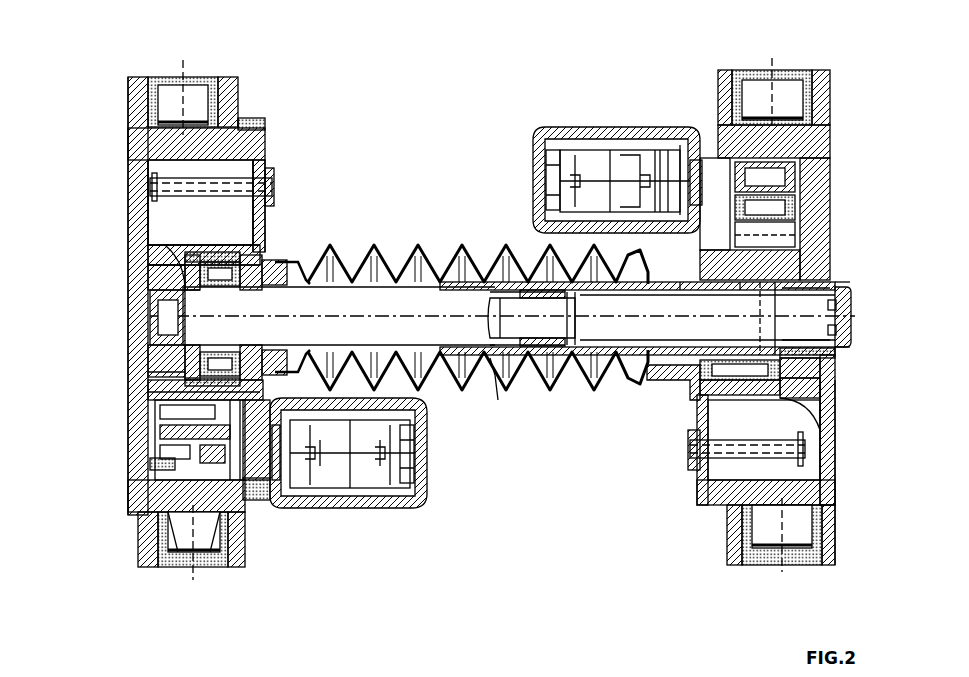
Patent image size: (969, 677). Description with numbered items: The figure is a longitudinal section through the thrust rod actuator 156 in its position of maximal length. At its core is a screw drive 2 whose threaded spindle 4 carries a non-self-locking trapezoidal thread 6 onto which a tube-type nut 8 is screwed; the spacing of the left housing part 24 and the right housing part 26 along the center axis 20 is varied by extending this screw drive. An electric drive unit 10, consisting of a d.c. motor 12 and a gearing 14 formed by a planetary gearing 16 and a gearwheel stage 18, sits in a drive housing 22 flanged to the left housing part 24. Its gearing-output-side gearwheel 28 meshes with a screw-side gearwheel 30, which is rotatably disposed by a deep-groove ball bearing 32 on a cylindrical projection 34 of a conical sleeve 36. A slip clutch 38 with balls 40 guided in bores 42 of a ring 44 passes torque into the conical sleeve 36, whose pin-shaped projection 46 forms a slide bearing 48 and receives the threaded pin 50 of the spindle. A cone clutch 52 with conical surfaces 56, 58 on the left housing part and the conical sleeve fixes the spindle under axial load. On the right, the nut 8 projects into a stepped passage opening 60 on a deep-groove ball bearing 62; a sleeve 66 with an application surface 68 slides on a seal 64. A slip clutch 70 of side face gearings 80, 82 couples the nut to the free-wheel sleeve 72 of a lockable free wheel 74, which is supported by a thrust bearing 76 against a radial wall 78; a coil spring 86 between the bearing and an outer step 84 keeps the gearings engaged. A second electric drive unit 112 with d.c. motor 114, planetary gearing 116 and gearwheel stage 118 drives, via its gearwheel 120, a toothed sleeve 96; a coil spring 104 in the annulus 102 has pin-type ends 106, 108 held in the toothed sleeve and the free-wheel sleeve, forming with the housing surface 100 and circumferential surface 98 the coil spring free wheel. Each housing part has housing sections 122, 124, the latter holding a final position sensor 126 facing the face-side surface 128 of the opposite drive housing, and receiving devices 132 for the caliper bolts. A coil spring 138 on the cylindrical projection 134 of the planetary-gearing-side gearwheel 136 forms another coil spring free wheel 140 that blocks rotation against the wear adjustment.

The screw drive 2 is at (530, 392).
The threaded spindle 4 is at (388, 300).
The trapezoidal thread 6 is at (440, 262).
The nut 8 is at (497, 388).
The electric drive unit 10 is at (278, 600).
The d.c. motor 12 is at (380, 480).
The gearing 14 is at (308, 540).
The planetary gearing 16 is at (276, 500).
The gearwheel stage 18 is at (126, 456).
The center axis 20 is at (852, 316).
The drive housing 22 is at (420, 508).
The left housing part 24 is at (118, 150).
The right housing part 26 is at (836, 498).
The gearing-output-side gearwheel 28 is at (148, 392).
The screw-side gearwheel 30 is at (148, 258).
The deep-groove ball bearing 32 is at (165, 268).
The cylindrical projection 34 is at (300, 262).
The conical sleeve 36 is at (215, 284).
The slip clutch 38 is at (248, 352).
The balls 40 is at (212, 352).
The bores 42 is at (250, 285).
The ring 44 is at (266, 236).
The pin-shaped projection 46 is at (148, 360).
The slide bearing 48 is at (150, 318).
The threaded pin 50 is at (148, 285).
The cone clutch 52 is at (148, 372).
The conical surface 56 is at (192, 270).
The conical surface 58 is at (148, 392).
The stepped passage opening 60 is at (836, 276).
The deep-groove ball bearing 62 is at (662, 382).
The seal 64 is at (836, 356).
The sleeve 66 is at (850, 290).
The application surface 68 is at (855, 345).
The slip clutch 70 is at (775, 385).
The free-wheel sleeve 72 is at (735, 388).
The lockable free wheel 74 is at (690, 470).
The thrust bearing 76 is at (822, 376).
The radial wall 78 is at (822, 392).
The side face gearing 80 is at (800, 240).
The side face gearing 82 is at (800, 218).
The outer step 84 is at (738, 284).
The coil spring 86 is at (690, 284).
The toothed sleeve 96 is at (678, 176).
The radially outer circumferential surface 98 is at (763, 318).
The housing surface 100 is at (632, 170).
The annulus 102 is at (822, 420).
The coil spring 104 is at (716, 296).
The pin-type end 106 is at (662, 188).
The pin-type end 108 is at (790, 284).
The electric drive unit 112 is at (686, 78).
The d.c. motor 114 is at (588, 160).
The planetary gearing 116 is at (700, 150).
The gearwheel stage 118 is at (834, 164).
The gearing-output-side gearwheel 120 is at (800, 192).
The housing section 122 is at (136, 498).
The housing section 124 is at (130, 150).
The final position sensor 126 is at (274, 184).
The face-side surface 128 is at (426, 458).
The receiving device 132 is at (200, 98).
The cylindrical projection 134 is at (148, 422).
The planetary-gearing-side gearwheel 136 is at (250, 500).
The coil spring 138 is at (175, 555).
The coil spring free wheel 140 is at (210, 555).
The thrust rod actuator 156 is at (80, 74).